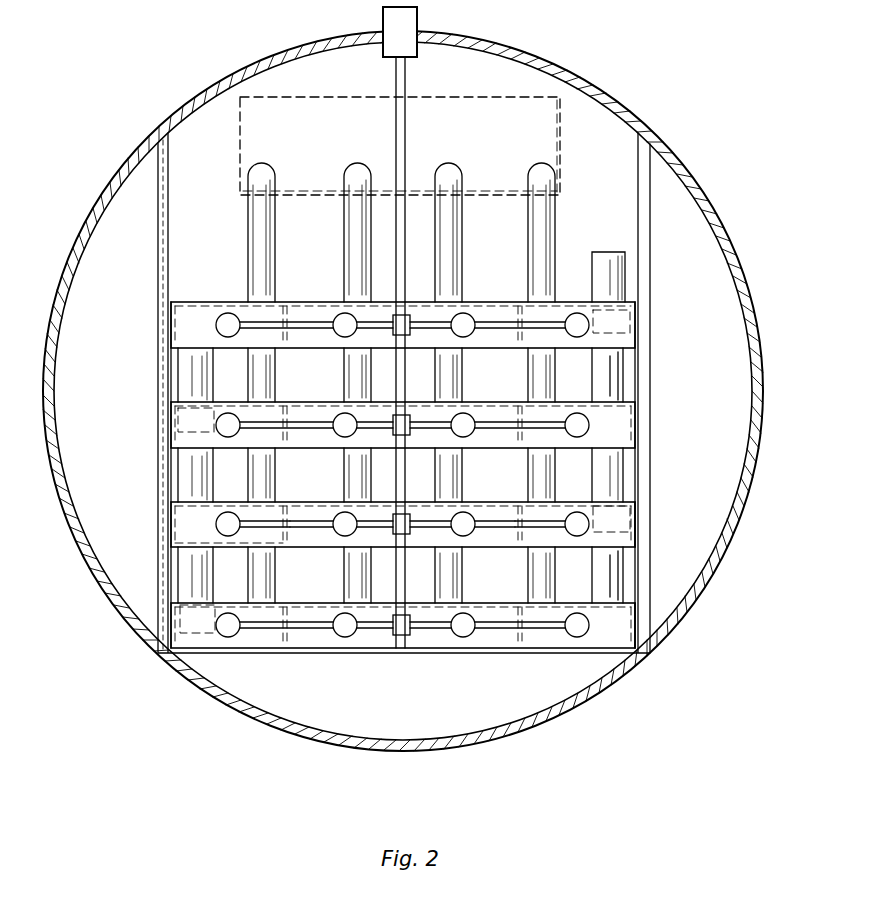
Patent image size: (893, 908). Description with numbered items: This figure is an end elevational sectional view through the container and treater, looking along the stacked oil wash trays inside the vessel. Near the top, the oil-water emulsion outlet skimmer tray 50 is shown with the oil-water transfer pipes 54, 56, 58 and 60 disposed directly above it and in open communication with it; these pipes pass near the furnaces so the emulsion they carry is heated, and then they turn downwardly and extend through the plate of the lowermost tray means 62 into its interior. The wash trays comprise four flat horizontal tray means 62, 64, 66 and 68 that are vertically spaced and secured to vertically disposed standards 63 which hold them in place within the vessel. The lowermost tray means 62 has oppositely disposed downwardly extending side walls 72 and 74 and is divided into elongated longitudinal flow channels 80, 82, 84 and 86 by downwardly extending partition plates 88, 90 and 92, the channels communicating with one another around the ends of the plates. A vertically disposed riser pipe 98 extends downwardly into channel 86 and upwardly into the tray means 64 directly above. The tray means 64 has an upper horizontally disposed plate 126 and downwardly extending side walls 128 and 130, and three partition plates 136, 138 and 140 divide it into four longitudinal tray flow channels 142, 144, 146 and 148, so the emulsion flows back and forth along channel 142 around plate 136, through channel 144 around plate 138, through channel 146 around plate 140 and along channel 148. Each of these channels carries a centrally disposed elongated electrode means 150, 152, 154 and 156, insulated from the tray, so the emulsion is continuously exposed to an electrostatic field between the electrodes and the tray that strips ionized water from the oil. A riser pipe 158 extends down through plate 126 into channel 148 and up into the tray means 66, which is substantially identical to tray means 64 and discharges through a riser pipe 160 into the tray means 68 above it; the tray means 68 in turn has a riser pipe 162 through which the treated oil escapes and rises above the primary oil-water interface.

The oil-water emulsion outlet skimmer tray 50 is at (478, 137).
The oil-water transfer pipe 54 is at (258, 222).
The oil-water transfer pipe 56 is at (352, 222).
The oil-water transfer pipe 58 is at (452, 226).
The oil-water transfer pipe 60 is at (545, 222).
The lowermost tray means 62 is at (613, 625).
The standards 63 is at (157, 273).
The tray means 64 is at (190, 518).
The tray means 66 is at (612, 418).
The tray means 68 is at (183, 328).
The side wall 72 is at (172, 623).
The side wall 74 is at (638, 615).
The flow channel 80 is at (563, 635).
The flow channel 82 is at (442, 633).
The flow channel 84 is at (330, 637).
The flow channel 86 is at (248, 637).
The partition plate 88 is at (518, 640).
The partition plate 90 is at (410, 647).
The partition plate 92 is at (287, 637).
The riser pipe 98 is at (192, 573).
The upper horizontally disposed plate 126 is at (582, 500).
The side wall 128 is at (175, 518).
The side wall 130 is at (638, 512).
The partition plate 136 is at (285, 537).
The partition plate 138 is at (405, 545).
The partition plate 140 is at (525, 535).
The tray flow channel 142 is at (208, 535).
The tray flow channel 144 is at (320, 537).
The tray flow channel 146 is at (502, 535).
The tray flow channel 148 is at (578, 540).
The electrode means 150 is at (240, 507).
The electrode means 152 is at (343, 507).
The electrode means 154 is at (473, 530).
The electrode means 156 is at (640, 536).
The riser pipe 158 is at (617, 460).
The riser pipe 160 is at (183, 375).
The riser pipe 162 is at (610, 277).